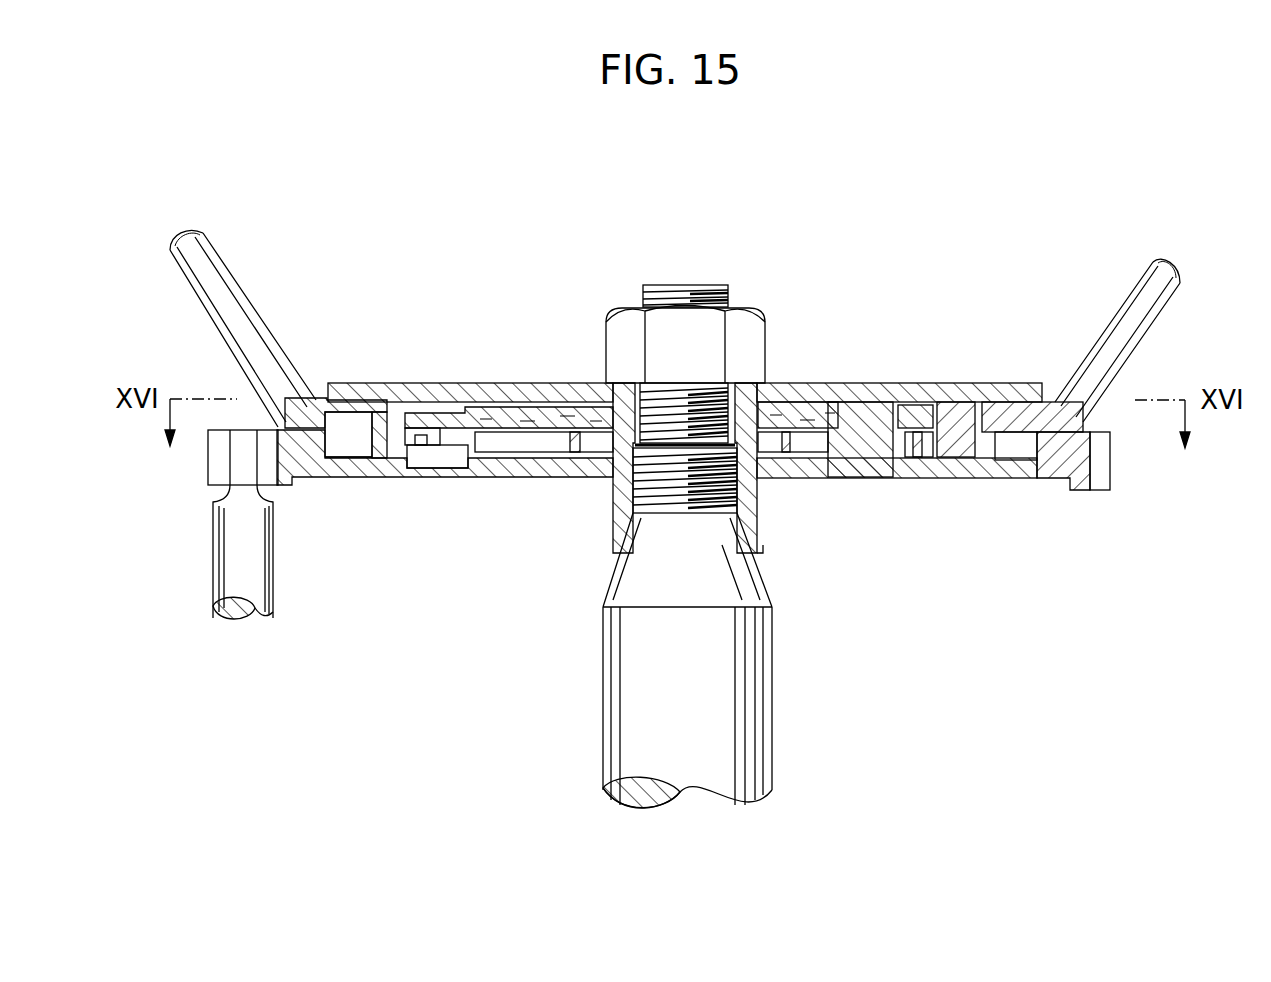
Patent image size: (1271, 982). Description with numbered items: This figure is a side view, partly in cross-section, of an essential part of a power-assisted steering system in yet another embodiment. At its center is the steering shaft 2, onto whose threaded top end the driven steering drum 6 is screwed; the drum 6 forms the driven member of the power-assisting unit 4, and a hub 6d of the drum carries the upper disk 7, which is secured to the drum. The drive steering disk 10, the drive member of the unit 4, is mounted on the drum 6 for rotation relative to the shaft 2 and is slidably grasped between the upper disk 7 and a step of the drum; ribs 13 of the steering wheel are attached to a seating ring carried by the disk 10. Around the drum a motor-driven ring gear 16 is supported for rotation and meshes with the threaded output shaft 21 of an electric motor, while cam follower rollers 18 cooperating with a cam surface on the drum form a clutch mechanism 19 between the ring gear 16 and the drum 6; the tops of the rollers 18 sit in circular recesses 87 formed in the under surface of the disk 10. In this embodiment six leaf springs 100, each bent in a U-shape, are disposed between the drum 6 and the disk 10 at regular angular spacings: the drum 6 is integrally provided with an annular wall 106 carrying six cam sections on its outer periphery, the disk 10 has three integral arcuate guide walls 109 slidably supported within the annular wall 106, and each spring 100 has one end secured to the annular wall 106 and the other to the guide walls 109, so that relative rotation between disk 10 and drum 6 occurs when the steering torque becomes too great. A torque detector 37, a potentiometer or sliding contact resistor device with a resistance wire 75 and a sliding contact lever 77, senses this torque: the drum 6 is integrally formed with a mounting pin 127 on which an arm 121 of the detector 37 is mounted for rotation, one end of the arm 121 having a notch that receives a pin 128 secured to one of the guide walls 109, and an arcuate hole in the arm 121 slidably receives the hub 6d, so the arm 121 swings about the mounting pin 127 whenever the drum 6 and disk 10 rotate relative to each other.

The steering shaft 2 is at (762, 718).
The power-assisting unit 4 is at (860, 578).
The driven steering drum 6 is at (518, 478).
The hub 6d is at (746, 513).
The upper disk 7 is at (432, 390).
The drive steering disk 10 is at (1055, 402).
The ribs 13 is at (1128, 298).
The ring gear 16 is at (281, 483).
The cam follower rollers 18 is at (345, 453).
The clutch mechanism 19 is at (346, 420).
The output shaft 21 is at (222, 537).
The torque detector 37 is at (449, 527).
The resistance wire 75 is at (460, 460).
The sliding contact lever 77 is at (416, 470).
The circular recesses 87 is at (318, 408).
The leaf springs 100 is at (552, 447).
The annular wall 106 is at (382, 442).
The arcuate guide walls 109 is at (963, 447).
The arm 121 is at (513, 413).
The mounting pin 127 is at (860, 418).
The pin 128 is at (933, 418).